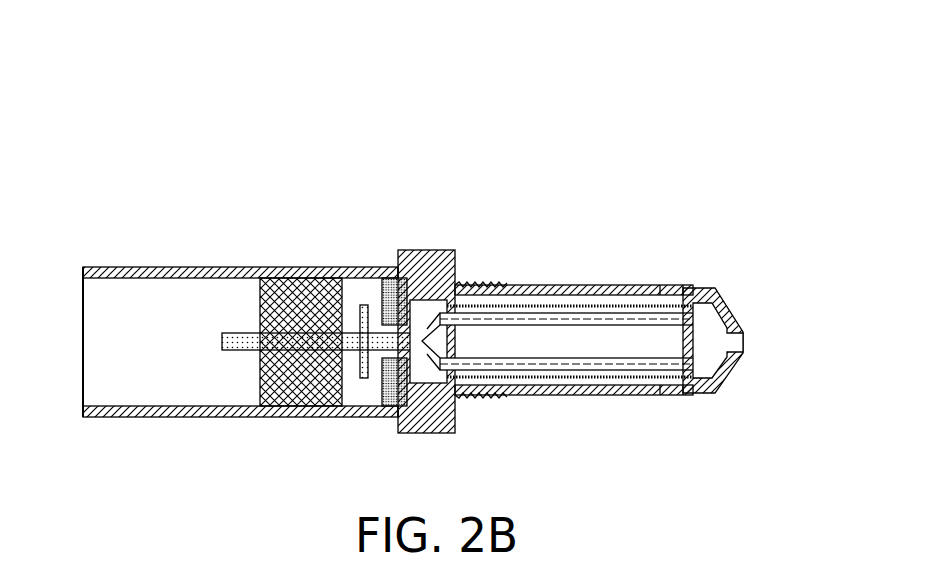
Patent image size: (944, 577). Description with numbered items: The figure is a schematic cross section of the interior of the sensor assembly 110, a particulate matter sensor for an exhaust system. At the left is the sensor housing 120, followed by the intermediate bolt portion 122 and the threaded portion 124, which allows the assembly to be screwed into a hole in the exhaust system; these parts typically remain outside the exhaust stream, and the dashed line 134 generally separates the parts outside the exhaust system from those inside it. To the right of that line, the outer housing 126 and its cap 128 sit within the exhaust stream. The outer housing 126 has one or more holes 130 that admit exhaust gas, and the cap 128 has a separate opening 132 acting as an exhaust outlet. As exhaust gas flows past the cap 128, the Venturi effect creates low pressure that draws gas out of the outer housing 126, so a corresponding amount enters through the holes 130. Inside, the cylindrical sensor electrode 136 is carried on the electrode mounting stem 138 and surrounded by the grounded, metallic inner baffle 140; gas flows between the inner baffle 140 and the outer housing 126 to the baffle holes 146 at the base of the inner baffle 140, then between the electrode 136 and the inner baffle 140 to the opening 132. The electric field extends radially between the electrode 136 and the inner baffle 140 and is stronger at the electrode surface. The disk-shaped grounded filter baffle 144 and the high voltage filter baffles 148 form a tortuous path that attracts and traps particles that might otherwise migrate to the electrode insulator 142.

The injection device 110 is at (266, 131).
The sensor housing 120 is at (213, 267).
The intermediate bolt portion 122 is at (410, 250).
The threaded portion 124 is at (483, 284).
The outer housing 126 is at (602, 285).
The cap 128 is at (725, 297).
The holes 130 is at (667, 415).
The opening 132 is at (758, 342).
The dashed line 134 is at (112, 333).
The sensor electrode 136 is at (493, 368).
The electrode mounting stem 138 is at (230, 350).
The inner baffle 140 is at (565, 380).
The insulator 142 is at (318, 397).
The grounded filter baffle 144 is at (392, 402).
The baffle holes 146 is at (457, 294).
The high voltage filter baffles 148 is at (377, 267).